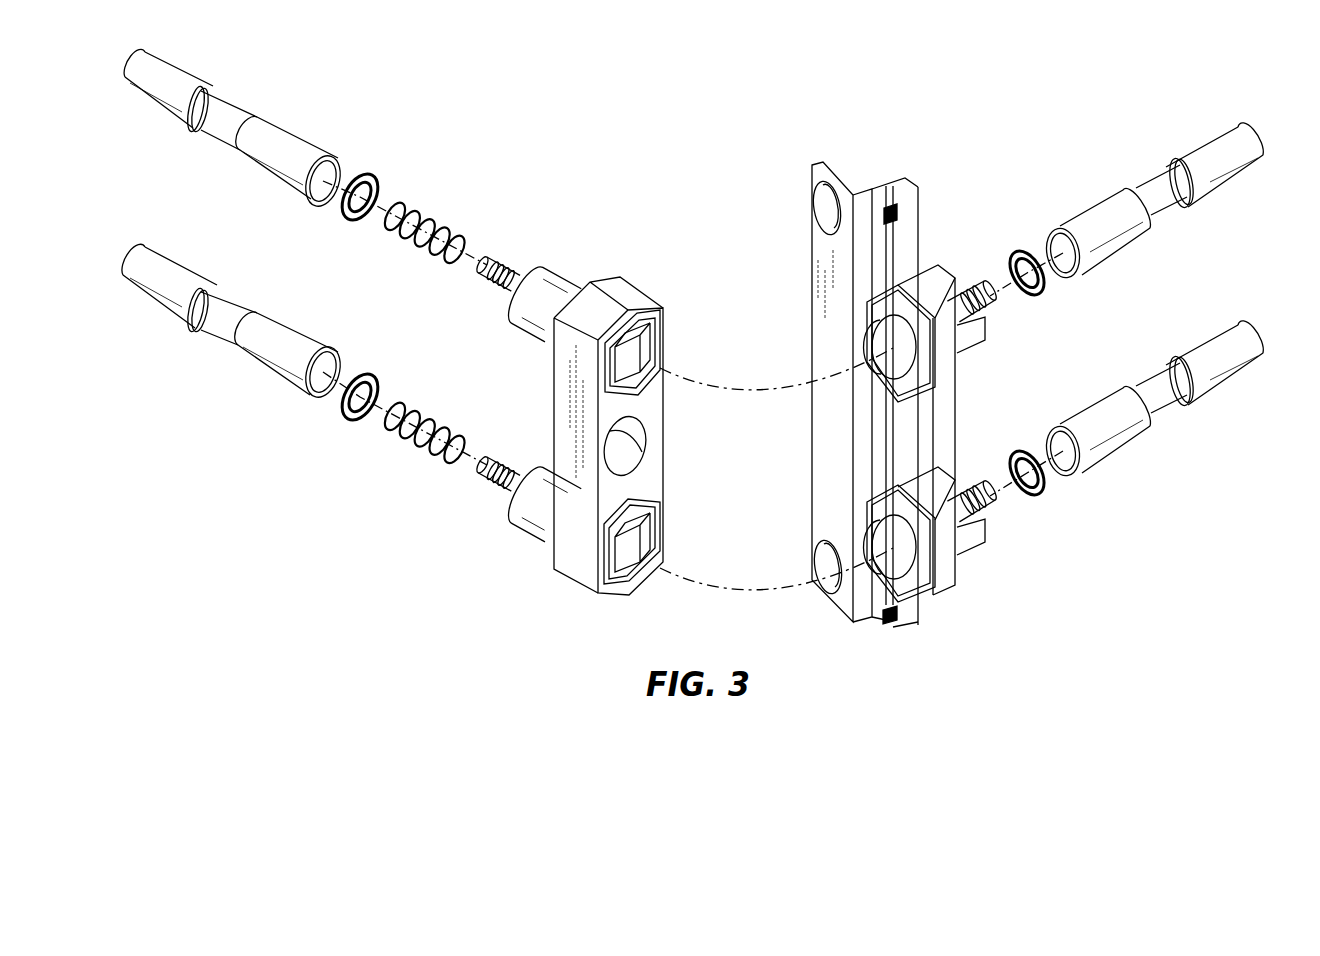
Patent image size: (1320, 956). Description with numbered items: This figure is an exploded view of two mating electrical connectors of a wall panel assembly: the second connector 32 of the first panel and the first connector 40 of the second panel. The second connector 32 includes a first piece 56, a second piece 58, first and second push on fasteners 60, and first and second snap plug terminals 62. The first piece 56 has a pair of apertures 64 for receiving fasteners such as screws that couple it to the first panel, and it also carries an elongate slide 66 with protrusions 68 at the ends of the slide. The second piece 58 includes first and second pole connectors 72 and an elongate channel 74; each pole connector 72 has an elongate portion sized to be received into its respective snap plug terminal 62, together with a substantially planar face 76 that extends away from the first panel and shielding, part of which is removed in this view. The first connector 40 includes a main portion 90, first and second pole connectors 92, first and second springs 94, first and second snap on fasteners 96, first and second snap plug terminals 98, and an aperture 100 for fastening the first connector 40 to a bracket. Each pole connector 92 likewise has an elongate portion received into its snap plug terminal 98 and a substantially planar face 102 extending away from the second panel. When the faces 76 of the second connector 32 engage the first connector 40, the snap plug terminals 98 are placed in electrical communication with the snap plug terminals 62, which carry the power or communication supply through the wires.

The second connector 32 is at (935, 152).
The first connector 40 is at (585, 255).
The first piece 56 is at (858, 198).
The second piece 58 is at (945, 568).
The push on fastener 60 is at (1033, 298).
The snap plug terminal 62 is at (1210, 180).
The aperture 64 is at (820, 203).
The elongate slide 66 is at (893, 253).
The protrusion 68 is at (884, 210).
The pole connector 72 is at (970, 292).
The elongate channel 74 is at (922, 260).
The planar face 76 is at (903, 360).
The main portion 90 is at (645, 477).
The pole connector 92 is at (515, 268).
The spring 94 is at (423, 216).
The snap on fastener 96 is at (368, 172).
The snap plug terminal 98 is at (302, 142).
The aperture 100 is at (642, 441).
The planar face 102 is at (640, 350).